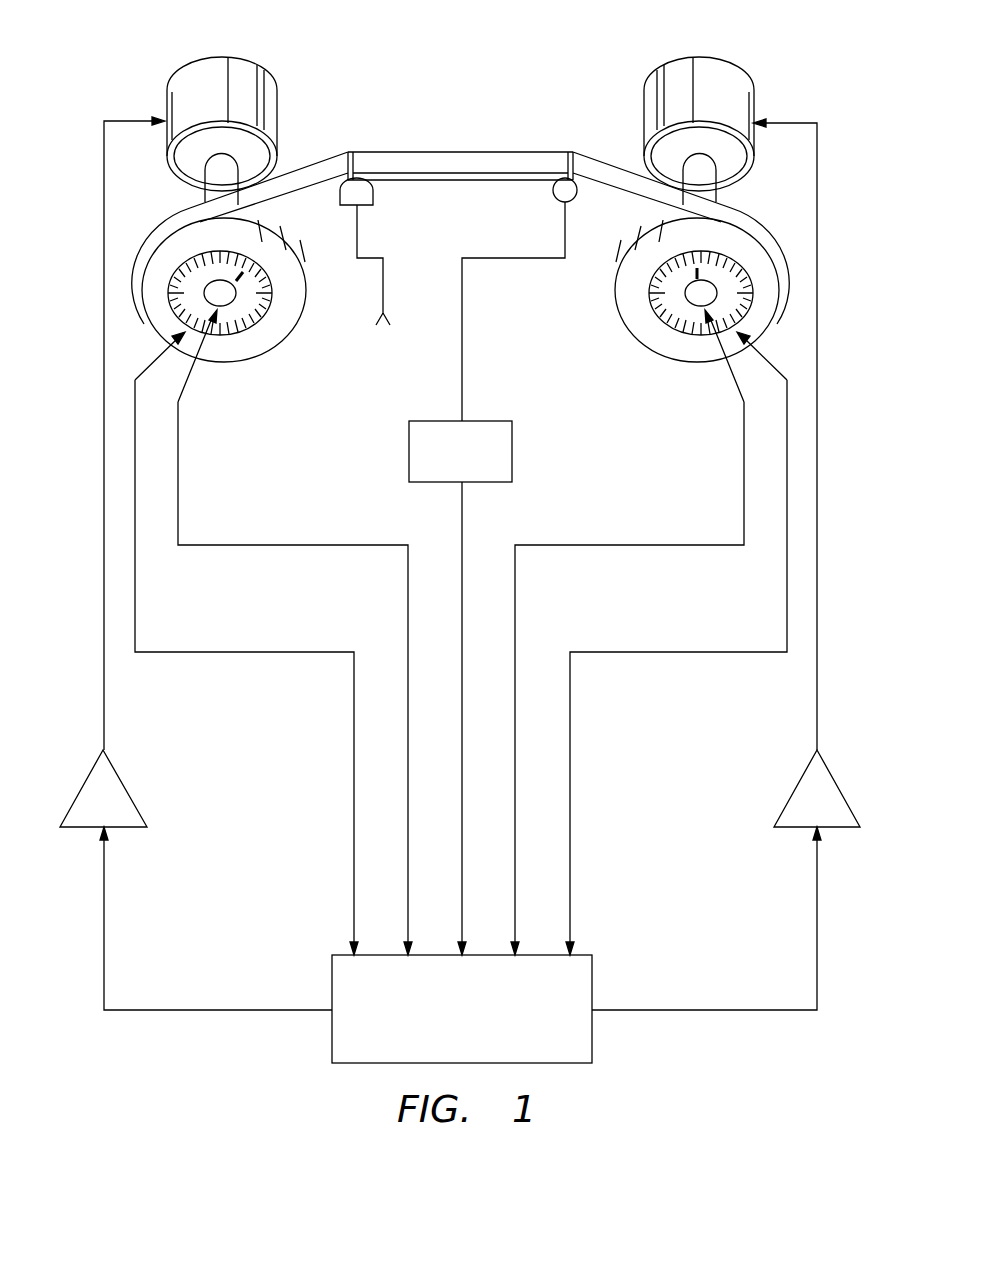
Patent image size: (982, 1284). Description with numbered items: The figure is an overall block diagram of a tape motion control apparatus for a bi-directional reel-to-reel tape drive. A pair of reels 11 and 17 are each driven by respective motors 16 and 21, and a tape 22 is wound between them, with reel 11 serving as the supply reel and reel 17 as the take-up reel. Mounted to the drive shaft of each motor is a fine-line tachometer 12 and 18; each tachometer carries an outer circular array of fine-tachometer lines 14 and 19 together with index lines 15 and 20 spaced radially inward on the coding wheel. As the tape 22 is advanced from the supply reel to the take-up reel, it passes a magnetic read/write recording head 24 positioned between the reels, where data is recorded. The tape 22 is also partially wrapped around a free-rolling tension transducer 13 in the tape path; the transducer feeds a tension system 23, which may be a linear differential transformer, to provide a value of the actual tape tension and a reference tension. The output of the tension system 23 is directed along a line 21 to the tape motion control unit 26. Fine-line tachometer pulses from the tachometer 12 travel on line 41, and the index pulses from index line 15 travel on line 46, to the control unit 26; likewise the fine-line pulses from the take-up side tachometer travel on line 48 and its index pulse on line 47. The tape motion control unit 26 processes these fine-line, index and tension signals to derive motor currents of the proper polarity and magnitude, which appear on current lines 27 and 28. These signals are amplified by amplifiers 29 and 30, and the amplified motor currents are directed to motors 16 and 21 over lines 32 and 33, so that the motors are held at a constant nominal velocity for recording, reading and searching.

The reel 11 is at (149, 304).
The fine-line tachometer 12 is at (237, 338).
The tension transducer 13 is at (553, 190).
The fine-tachometer lines 14 is at (186, 258).
The index line 15 is at (244, 274).
The motor 16 is at (193, 73).
The reel 17 is at (768, 315).
The fine-line tachometer 18 is at (680, 337).
The fine-tachometer lines 19 is at (663, 332).
The index line 20 is at (690, 276).
The motor 21 is at (718, 63).
The tape 22 is at (322, 171).
The tension system 23 is at (409, 452).
The magnetic read/write recording head 24 is at (373, 195).
The tape motion control unit 26 is at (592, 1035).
The current line 27 is at (104, 912).
The current line 28 is at (817, 912).
The amplifier 29 is at (82, 788).
The amplifier 30 is at (841, 788).
The line 32 is at (138, 121).
The line 33 is at (781, 123).
The line 41 is at (245, 652).
The line 46 is at (291, 545).
The line 47 is at (631, 545).
The line 48 is at (677, 652).